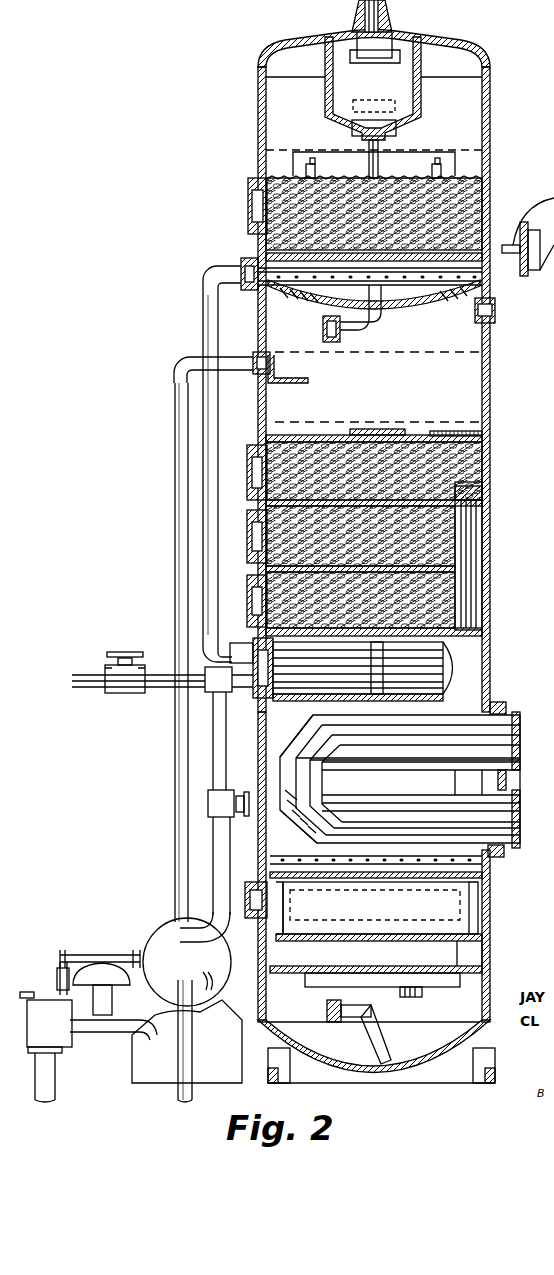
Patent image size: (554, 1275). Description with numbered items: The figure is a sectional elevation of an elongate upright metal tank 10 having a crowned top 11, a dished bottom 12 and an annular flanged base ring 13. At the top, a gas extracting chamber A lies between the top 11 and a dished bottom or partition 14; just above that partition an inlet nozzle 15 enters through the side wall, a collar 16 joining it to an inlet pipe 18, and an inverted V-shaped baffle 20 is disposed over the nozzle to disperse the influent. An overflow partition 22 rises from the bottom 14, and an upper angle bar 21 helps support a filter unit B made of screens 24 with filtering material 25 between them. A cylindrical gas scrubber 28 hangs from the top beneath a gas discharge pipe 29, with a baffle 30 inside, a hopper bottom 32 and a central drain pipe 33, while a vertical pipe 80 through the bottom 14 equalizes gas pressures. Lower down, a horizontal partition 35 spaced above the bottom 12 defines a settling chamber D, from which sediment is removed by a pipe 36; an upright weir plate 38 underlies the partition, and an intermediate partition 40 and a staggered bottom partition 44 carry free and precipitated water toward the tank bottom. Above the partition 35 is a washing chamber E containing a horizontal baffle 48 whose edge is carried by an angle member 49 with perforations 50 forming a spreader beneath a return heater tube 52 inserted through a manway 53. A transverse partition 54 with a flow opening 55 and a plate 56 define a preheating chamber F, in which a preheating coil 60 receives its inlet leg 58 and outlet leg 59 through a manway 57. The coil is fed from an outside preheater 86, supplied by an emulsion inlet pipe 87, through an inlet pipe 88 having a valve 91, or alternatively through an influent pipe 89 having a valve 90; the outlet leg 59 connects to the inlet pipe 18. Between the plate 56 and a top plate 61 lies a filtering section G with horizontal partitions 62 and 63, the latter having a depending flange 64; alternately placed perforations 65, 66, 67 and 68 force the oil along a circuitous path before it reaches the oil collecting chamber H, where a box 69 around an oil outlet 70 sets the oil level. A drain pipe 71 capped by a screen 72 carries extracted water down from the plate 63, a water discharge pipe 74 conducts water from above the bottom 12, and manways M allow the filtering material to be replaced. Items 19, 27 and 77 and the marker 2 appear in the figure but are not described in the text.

The tank 10 is at (457, 372).
The crowned top 11 is at (486, 58).
The dished bottom 12 is at (272, 1078).
The base ring 13 is at (492, 1062).
The dished bottom or partition 14 is at (388, 306).
The inlet nozzle 15 is at (266, 254).
The collar 16 is at (243, 268).
The inlet pipe 18 is at (203, 300).
The dished pan 19 is at (440, 270).
The inverted V-shaped baffle 20 is at (486, 272).
The upper transverse angle bar 21 is at (455, 166).
The overflow partition 22 is at (450, 152).
The horizontal screens or foraminous members 24 is at (470, 180).
The fibrous or filtering material 25 is at (250, 206).
The elbow flange 27 is at (323, 326).
The cylindrical gas scrubber 28 is at (320, 80).
The gas discharge pipe 29 is at (360, 12).
The baffle 30 is at (330, 68).
The hopper bottom 32 is at (345, 120).
The central drain pipe 33 is at (385, 142).
The horizontal partition 35 is at (425, 878).
The sediment pipe 36 is at (383, 1065).
The upright baffle or weir plate 38 is at (458, 923).
The intermediate horizontal partition 40 is at (493, 968).
The horizontal bottom partition 44 is at (418, 975).
The horizontal baffle 48 is at (313, 855).
The transverse angle member 49 is at (300, 865).
The perforations 50 is at (380, 864).
The return heater tube 52 is at (233, 780).
The manway 53 is at (496, 858).
The transverse partition 54 is at (415, 700).
The flow opening or passage 55 is at (470, 700).
The plate 56 is at (470, 630).
The manway 57 is at (247, 640).
The inlet leg 58 is at (222, 692).
The outlet leg 59 is at (232, 655).
The preheating coil 60 is at (440, 660).
The horizontal plate 61 is at (298, 436).
The horizontal partition 62 is at (482, 500).
The horizontal partition 63 is at (253, 570).
The depending flange 64 is at (482, 586).
The perforations 65 is at (253, 607).
The perforations 66 is at (453, 546).
The perforations 67 is at (250, 464).
The perforations 68 is at (446, 435).
The box 69 is at (280, 395).
The oil outlet 70 is at (255, 355).
The drain pipe 71 is at (466, 530).
The screen 72 is at (482, 476).
The water discharge pipe 74 is at (372, 1003).
The level line 77 is at (340, 164).
The vertical pipe 80 is at (325, 172).
The outside horizontal heat exchanger or preheater 86 is at (165, 950).
The emulsion inlet pipe 87 is at (180, 1090).
The inlet pipe 88 is at (213, 850).
The influent pipe 89 is at (160, 689).
The valve 90 is at (106, 668).
The valve 91 is at (207, 805).
The side fitting 2 is at (500, 249).
The gas extracting chamber A is at (470, 118).
The filter unit B is at (490, 200).
The precipitating or settling chamber D is at (290, 998).
The washing chamber E is at (280, 753).
The preheating chamber F is at (470, 680).
The filtering section G is at (250, 543).
The oil collecting chamber H is at (490, 356).
The manways M is at (250, 532).